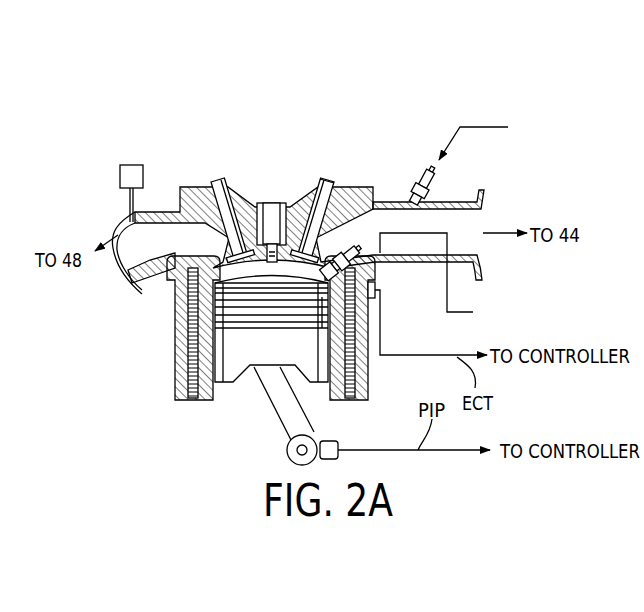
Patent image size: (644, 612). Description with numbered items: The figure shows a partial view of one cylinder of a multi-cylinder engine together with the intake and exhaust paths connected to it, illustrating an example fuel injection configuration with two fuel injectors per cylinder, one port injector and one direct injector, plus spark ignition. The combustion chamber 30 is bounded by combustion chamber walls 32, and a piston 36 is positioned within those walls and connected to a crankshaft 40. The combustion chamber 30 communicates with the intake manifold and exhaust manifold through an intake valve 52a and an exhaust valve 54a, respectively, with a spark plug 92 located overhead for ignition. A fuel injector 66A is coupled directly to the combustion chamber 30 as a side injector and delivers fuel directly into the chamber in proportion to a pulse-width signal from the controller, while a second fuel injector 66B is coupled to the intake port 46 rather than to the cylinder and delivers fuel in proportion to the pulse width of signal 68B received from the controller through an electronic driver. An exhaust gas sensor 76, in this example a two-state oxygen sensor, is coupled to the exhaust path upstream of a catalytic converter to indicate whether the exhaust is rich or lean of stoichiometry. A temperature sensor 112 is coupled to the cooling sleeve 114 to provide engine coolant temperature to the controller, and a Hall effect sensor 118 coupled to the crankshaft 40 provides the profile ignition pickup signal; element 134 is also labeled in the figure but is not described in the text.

The combustion chamber 30 is at (193, 302).
The combustion chamber walls 32 is at (210, 400).
The piston 36 is at (253, 358).
The crankshaft 40 is at (290, 456).
The intake port 46 is at (462, 200).
The intake valve 52a is at (387, 232).
The exhaust valve 54a is at (226, 246).
The fuel injector 66A is at (470, 310).
The fuel injector 66B is at (490, 127).
The signal 68B is at (424, 173).
The exhaust gas sensor 76 is at (131, 165).
The spark plug 92 is at (274, 203).
The temperature sensor 112 is at (377, 295).
The cooling sleeve 114 is at (348, 363).
The Hall effect sensor 118 is at (345, 449).
The valve actuator 134 is at (329, 181).